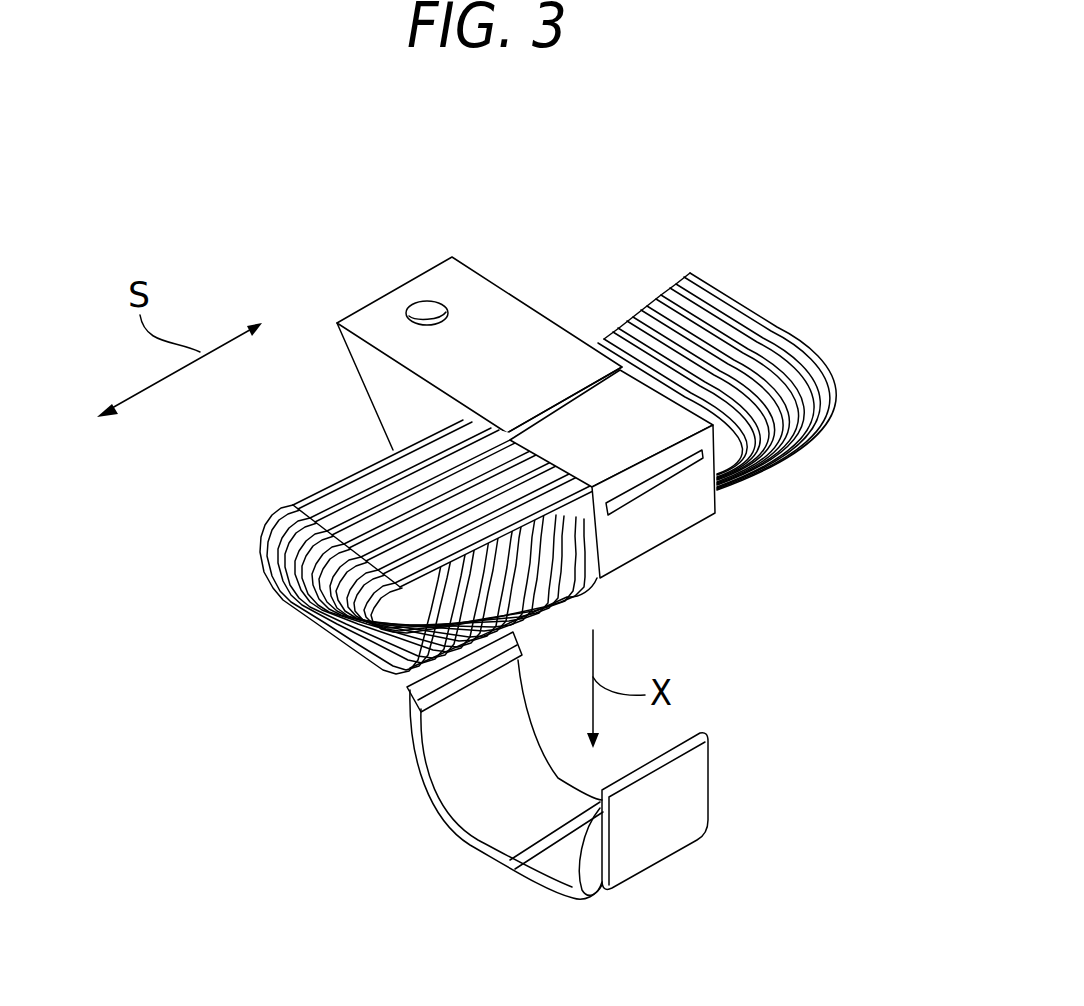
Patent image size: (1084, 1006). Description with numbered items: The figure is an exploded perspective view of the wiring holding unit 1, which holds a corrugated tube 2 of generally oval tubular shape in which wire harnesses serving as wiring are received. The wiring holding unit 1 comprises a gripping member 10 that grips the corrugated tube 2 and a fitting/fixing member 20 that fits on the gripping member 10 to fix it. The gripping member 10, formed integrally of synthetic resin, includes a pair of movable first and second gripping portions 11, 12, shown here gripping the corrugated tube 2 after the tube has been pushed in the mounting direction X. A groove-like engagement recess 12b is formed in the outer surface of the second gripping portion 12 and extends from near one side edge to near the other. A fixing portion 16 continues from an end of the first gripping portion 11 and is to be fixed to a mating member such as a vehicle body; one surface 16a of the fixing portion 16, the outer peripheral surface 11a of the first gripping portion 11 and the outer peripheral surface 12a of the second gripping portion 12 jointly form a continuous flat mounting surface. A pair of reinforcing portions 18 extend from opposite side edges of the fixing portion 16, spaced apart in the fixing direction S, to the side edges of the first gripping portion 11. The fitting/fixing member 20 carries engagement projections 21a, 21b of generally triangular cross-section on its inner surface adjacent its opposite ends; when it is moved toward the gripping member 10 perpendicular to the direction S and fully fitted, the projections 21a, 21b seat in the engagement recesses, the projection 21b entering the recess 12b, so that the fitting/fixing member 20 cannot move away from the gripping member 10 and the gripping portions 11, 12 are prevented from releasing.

The wiring holding unit 1 is at (380, 836).
The corrugated tube 2 is at (782, 292).
The gripping member 10 is at (375, 275).
The first gripping portion 11 is at (538, 288).
The outer peripheral surface of the first gripping portion 11a is at (542, 365).
The second gripping portion 12 is at (653, 553).
The outer peripheral surface of the second gripping portion 12a is at (770, 465).
The engagement recess 12b is at (677, 483).
The fixing portion 16 is at (483, 312).
The one surface of the fixing portion 16a is at (425, 302).
The reinforcing portions 18 is at (400, 387).
The fitting/fixing member 20 is at (465, 870).
The engagement projection 21a is at (415, 715).
The engagement projection 21b is at (575, 898).